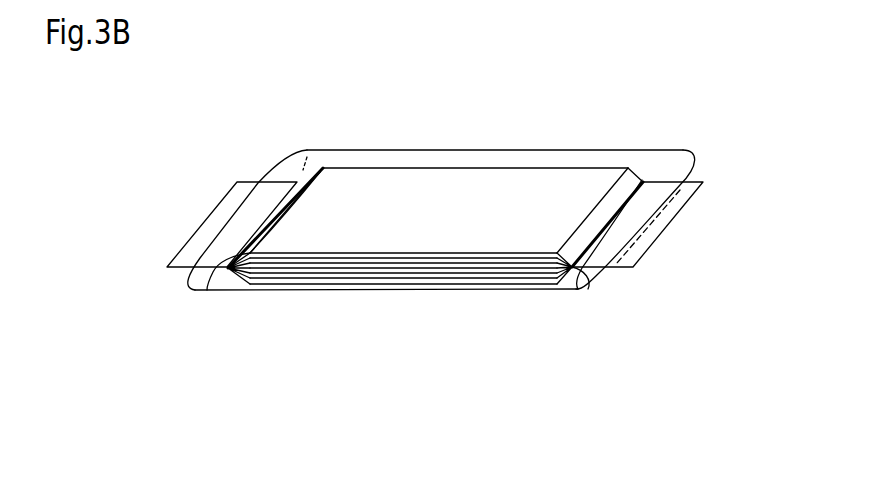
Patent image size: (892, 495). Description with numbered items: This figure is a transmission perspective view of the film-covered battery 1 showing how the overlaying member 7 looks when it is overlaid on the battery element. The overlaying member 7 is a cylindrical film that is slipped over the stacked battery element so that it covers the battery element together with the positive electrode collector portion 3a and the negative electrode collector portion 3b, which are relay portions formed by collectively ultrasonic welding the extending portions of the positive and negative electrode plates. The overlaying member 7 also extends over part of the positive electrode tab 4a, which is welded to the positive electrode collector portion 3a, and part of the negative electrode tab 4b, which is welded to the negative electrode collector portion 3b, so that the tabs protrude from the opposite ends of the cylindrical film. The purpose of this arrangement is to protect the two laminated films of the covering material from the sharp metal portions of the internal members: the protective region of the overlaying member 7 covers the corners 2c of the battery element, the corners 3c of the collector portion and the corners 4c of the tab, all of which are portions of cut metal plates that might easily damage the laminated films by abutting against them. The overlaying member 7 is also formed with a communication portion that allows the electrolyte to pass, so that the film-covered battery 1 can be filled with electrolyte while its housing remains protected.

The film-covered battery 1 is at (463, 291).
The corners of battery element 2c is at (538, 262).
The positive electrode collector portion 3a is at (622, 183).
The negative electrode collector portion 3b is at (207, 291).
The corners of collector portion 3c is at (585, 288).
The positive electrode tab 4a is at (683, 203).
The negative electrode tab 4b is at (247, 183).
The corners of tab 4c is at (593, 290).
The overlaying member 7 is at (520, 150).